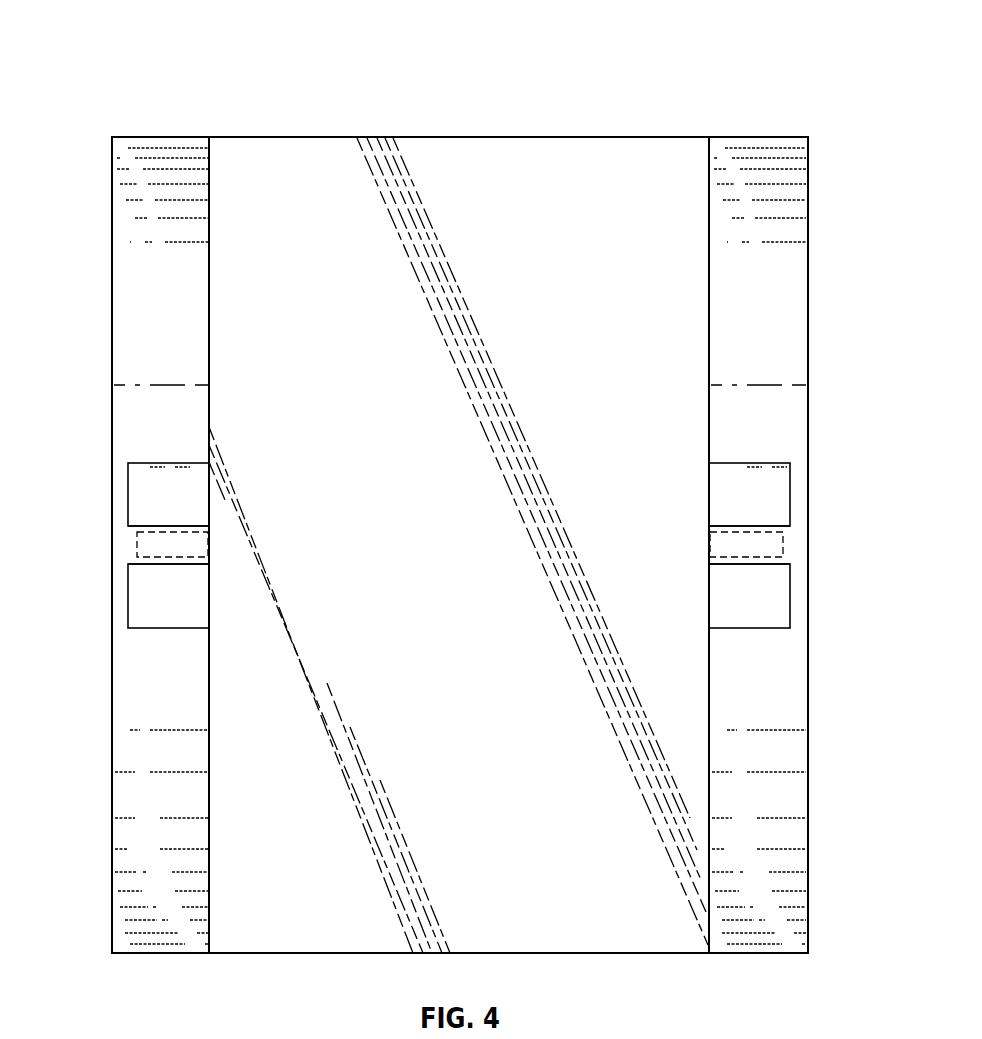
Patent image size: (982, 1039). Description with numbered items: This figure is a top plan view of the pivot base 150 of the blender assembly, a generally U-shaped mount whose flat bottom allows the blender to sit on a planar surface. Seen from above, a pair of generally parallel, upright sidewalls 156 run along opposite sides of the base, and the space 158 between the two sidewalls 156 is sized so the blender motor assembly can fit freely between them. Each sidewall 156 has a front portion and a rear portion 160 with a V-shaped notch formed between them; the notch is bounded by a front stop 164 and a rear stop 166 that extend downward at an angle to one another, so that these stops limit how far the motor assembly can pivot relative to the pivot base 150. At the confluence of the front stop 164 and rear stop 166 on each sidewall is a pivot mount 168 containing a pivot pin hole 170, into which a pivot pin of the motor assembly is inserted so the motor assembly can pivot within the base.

The pivot base 150 is at (460, 137).
The sidewall 156 is at (112, 260).
The space 158 is at (538, 197).
The rear portion 160 is at (123, 137).
The front stop 164 is at (140, 627).
The rear stop 166 is at (140, 465).
The pivot mount 168 is at (135, 549).
The pivot pin hole 170 is at (196, 532).